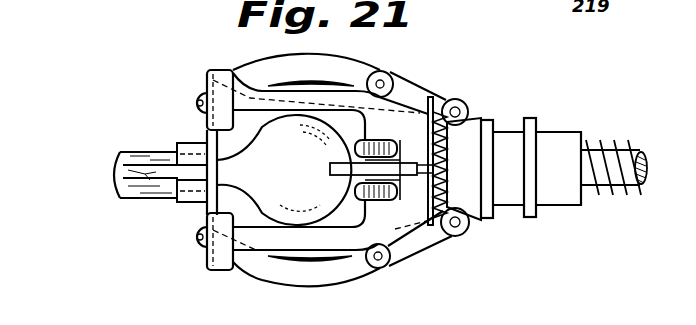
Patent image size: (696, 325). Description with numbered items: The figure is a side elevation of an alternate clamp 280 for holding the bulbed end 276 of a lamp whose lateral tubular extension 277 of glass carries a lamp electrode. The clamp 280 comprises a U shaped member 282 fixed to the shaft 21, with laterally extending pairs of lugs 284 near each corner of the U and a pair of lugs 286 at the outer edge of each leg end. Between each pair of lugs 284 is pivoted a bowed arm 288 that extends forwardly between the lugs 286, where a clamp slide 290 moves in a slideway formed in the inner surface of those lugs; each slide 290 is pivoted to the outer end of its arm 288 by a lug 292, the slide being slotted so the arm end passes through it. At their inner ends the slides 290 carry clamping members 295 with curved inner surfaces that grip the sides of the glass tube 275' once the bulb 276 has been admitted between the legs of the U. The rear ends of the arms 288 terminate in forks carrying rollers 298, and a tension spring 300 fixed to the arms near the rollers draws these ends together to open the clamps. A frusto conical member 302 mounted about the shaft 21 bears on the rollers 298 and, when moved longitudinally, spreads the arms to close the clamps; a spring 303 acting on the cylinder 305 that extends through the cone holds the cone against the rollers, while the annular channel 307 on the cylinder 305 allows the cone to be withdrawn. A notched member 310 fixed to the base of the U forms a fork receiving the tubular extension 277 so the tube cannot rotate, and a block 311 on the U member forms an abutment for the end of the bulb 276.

The shaft 21 is at (637, 160).
The glass tube 275' is at (115, 176).
The bulbed end 276 is at (284, 170).
The lateral tubular extension 277 is at (377, 137).
The clamp 280 is at (183, 165).
The U shaped member 282 is at (398, 94).
The lugs 284 is at (390, 72).
The lugs 286 is at (222, 70).
The arm 288 is at (343, 63).
The clamp slide 290 is at (207, 133).
The lug 292 is at (196, 100).
The clamping members 295 is at (176, 146).
The rollers 298 is at (466, 110).
The tension spring 300 is at (433, 100).
The frusto conical member 302 is at (486, 126).
The spring 303 is at (614, 196).
The cylinder 305 is at (566, 136).
The annular channel 307 is at (516, 208).
The notched member 310 is at (385, 205).
The block 311 is at (357, 148).